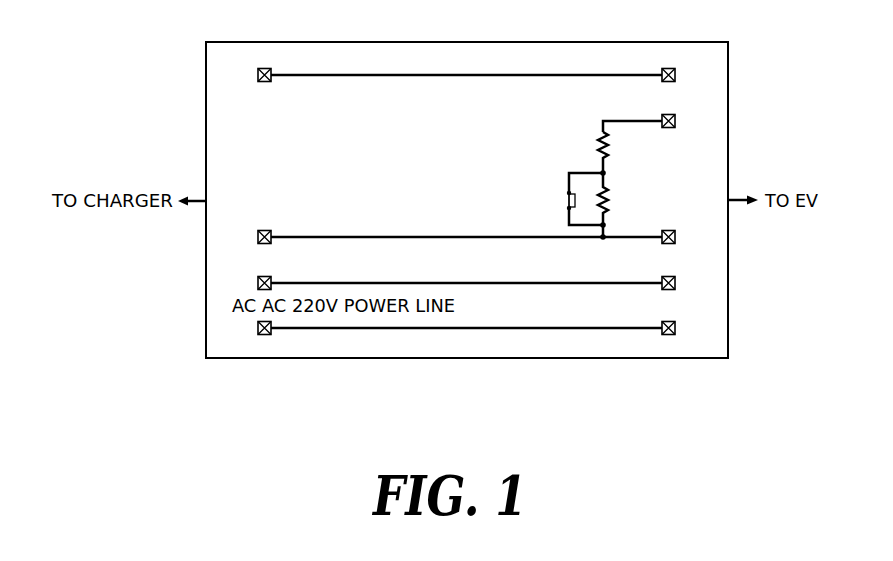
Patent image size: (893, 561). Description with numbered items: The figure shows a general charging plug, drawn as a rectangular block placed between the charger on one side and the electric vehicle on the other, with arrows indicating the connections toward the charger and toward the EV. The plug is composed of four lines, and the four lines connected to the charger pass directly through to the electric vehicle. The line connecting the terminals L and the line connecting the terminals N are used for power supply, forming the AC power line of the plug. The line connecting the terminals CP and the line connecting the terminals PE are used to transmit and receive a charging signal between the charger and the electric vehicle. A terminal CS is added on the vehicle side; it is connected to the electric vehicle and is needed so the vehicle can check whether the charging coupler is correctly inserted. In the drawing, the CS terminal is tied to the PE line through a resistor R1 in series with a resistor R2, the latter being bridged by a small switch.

The CP terminal CP is at (467, 75).
The CS terminal CS is at (655, 121).
The PE terminal PE is at (466, 237).
The N terminal N is at (467, 282).
The L terminal L is at (467, 327).
The first resistor R1 is at (617, 152).
The second resistor R2 is at (602, 203).